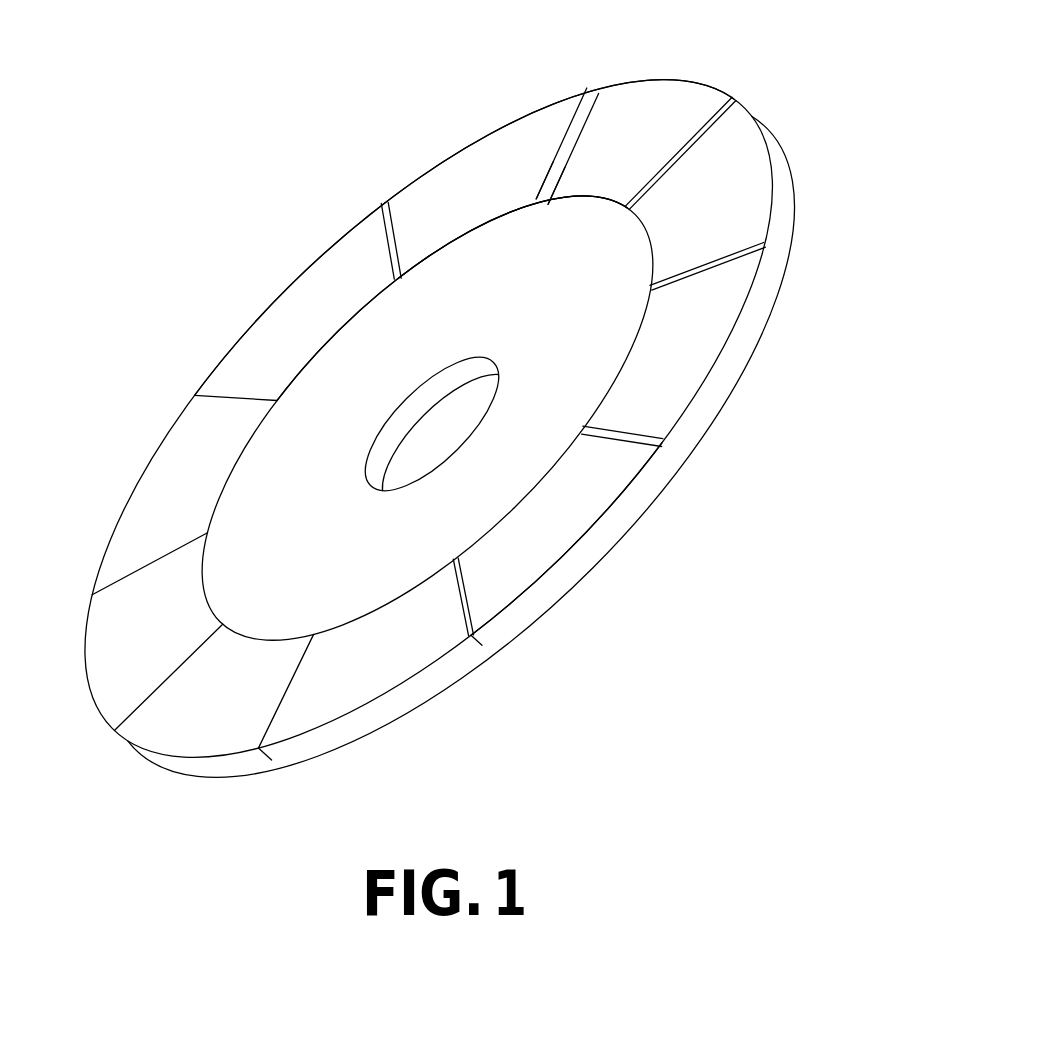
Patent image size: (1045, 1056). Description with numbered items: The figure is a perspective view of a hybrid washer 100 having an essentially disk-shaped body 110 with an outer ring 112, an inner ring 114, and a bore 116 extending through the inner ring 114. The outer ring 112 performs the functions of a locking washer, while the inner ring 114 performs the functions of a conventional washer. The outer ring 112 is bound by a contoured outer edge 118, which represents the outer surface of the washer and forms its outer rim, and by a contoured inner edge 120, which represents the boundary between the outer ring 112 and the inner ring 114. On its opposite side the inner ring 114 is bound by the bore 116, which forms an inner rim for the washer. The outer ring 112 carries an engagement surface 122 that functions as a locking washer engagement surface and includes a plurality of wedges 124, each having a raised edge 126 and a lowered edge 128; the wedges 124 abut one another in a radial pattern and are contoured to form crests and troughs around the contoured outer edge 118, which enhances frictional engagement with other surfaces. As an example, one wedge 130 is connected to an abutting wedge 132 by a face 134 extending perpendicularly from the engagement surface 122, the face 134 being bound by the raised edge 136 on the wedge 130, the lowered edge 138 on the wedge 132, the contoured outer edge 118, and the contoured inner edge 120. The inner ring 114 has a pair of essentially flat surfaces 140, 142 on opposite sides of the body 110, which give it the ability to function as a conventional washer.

The hybrid washer 100 is at (439, 432).
The disk-shaped body 110 is at (715, 90).
The outer ring 112 is at (318, 350).
The inner ring 114 is at (515, 291).
The bore 116 is at (432, 424).
The contoured outer edge 118 is at (610, 390).
The contoured inner edge 120 is at (723, 410).
The engagement surface 122 is at (488, 164).
The wedge 124 is at (297, 318).
The raised edge 126 is at (393, 250).
The lowered edge 128 is at (385, 207).
The wedge 130 is at (438, 205).
The abutting wedge 132 is at (607, 168).
The face 134 is at (590, 110).
The raised edge 136 is at (567, 130).
The lowered edge 138 is at (553, 185).
The flat surface 140 is at (523, 447).
The flat surface 142 is at (400, 442).